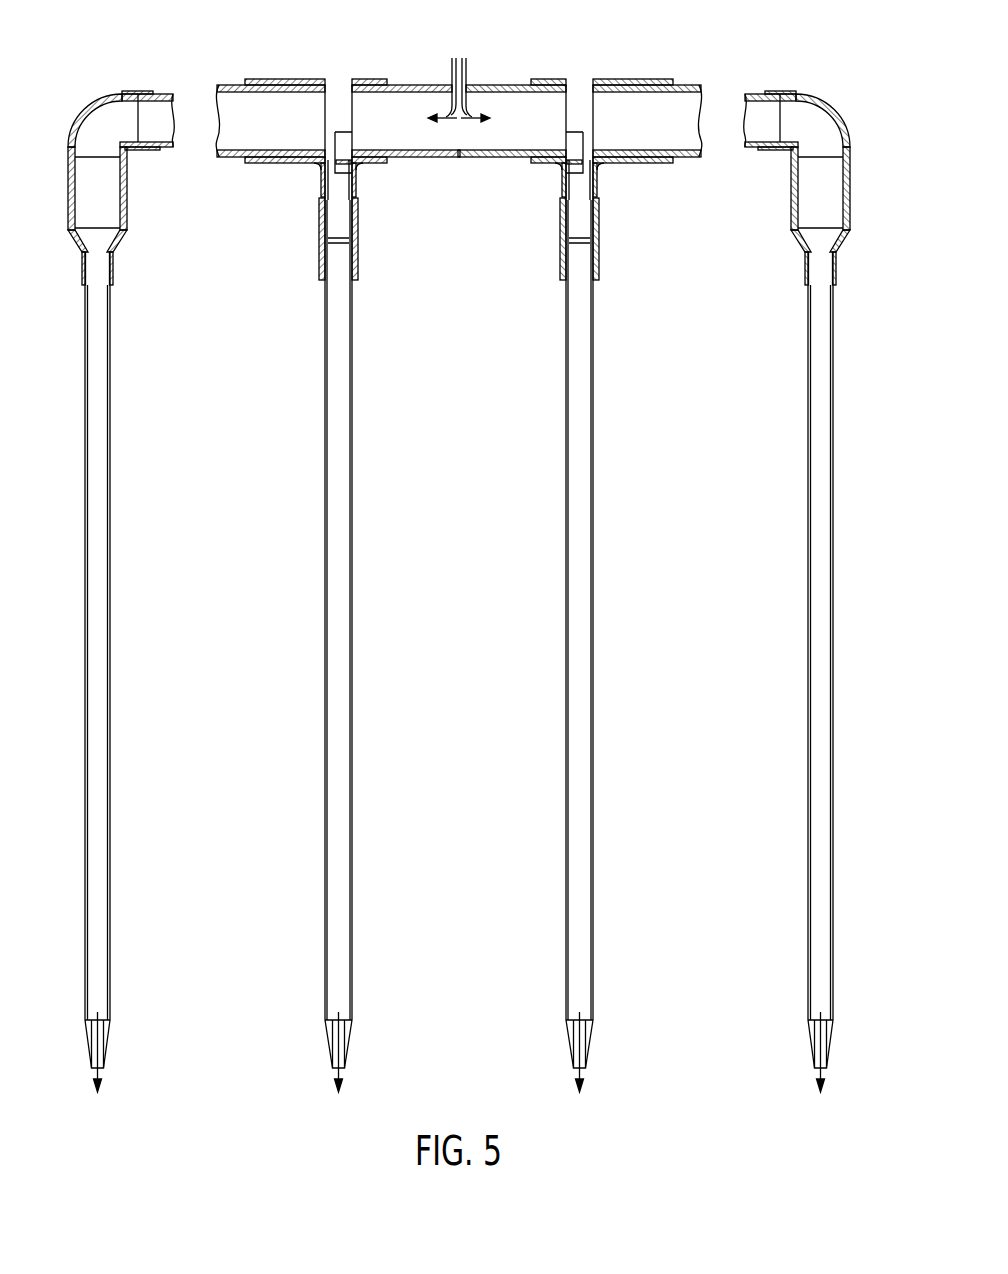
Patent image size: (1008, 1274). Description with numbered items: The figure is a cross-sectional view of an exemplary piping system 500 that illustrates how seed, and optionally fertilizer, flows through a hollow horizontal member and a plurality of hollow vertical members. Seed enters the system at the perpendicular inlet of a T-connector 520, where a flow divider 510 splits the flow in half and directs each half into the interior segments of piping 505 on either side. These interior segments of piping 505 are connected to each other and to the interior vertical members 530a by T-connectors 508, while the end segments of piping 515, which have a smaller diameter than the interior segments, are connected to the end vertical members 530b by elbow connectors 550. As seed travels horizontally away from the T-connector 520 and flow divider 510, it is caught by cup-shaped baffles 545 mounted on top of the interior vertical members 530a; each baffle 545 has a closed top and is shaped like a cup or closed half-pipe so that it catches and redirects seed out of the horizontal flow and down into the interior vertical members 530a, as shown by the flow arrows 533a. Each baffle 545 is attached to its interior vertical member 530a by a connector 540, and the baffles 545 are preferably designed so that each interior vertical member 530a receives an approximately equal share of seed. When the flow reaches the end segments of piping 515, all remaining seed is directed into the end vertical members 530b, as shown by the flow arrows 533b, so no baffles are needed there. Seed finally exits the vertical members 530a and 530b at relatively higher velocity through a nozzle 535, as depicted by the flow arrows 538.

The piping system 500 is at (459, 547).
The interior segments of piping 505 is at (227, 161).
The T-connectors 508 is at (274, 78).
The flow divider 510 is at (467, 62).
The T-connector 520 is at (452, 62).
The flow arrows 533a is at (345, 131).
The flow arrows 533b is at (113, 133).
The cup-shaped baffles 545 is at (324, 166).
The connector 540 is at (322, 220).
The interior vertical members 530a is at (325, 586).
The end vertical members 530b is at (110, 586).
The elbow connectors 550 is at (128, 91).
The end segments of piping 515 is at (155, 150).
The flow arrows 538 is at (97, 1025).
The nozzle 535 is at (108, 1058).